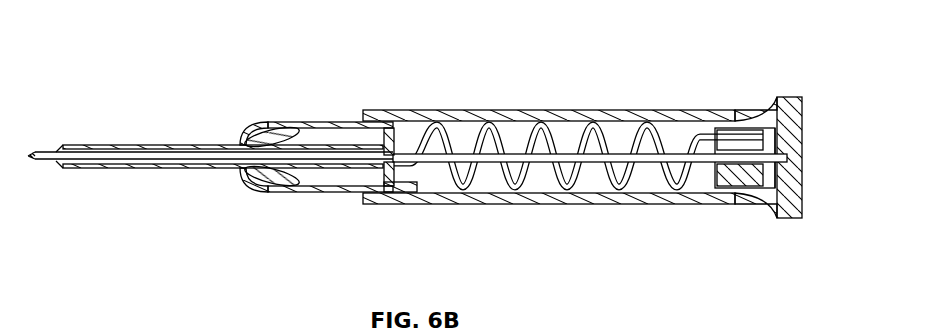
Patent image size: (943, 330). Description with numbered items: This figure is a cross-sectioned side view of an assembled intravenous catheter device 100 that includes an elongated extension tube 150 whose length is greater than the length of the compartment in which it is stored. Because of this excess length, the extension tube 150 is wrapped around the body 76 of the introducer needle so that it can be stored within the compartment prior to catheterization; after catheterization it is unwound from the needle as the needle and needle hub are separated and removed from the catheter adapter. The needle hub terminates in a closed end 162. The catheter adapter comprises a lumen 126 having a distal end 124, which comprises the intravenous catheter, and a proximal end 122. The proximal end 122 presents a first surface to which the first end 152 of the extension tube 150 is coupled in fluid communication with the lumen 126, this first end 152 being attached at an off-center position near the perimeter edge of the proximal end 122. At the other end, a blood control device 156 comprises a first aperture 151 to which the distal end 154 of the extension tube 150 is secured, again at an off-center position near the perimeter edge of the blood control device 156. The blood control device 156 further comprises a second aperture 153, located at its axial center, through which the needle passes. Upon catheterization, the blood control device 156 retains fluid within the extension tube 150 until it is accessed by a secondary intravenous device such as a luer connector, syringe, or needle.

The catheter device 100 is at (114, 32).
The distal end 124 is at (260, 112).
The proximal end 122 is at (368, 120).
The extension tube 150 is at (546, 112).
The first aperture 151 is at (736, 122).
The closed end 162 is at (803, 107).
The distal end 154 is at (764, 140).
The lumen 126 is at (365, 172).
The first end 152 is at (417, 178).
The body 76 is at (586, 191).
The second aperture 153 is at (688, 185).
The blood control device 156 is at (738, 190).